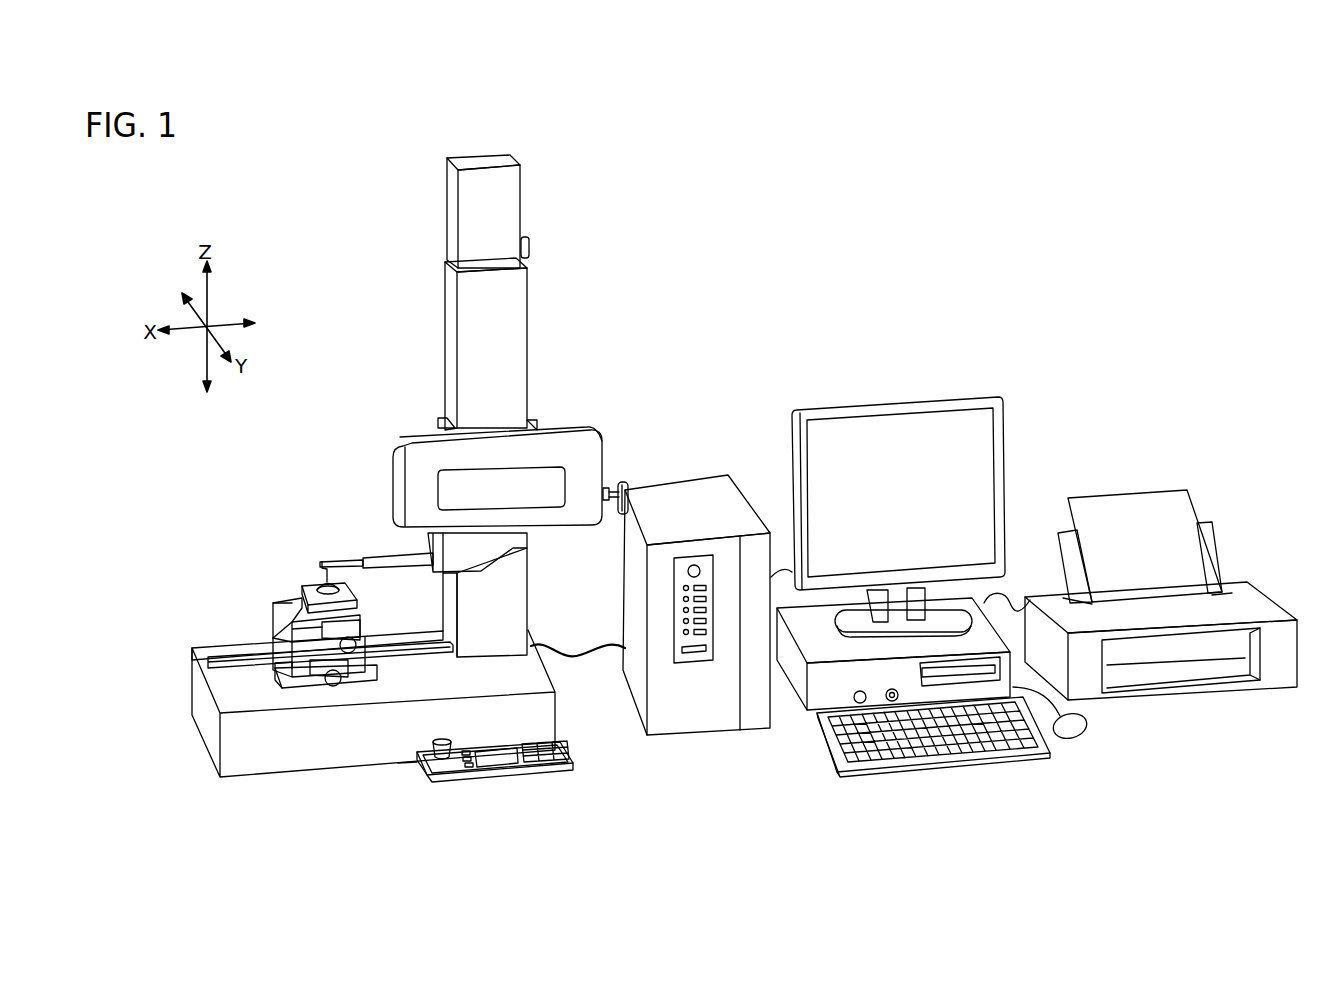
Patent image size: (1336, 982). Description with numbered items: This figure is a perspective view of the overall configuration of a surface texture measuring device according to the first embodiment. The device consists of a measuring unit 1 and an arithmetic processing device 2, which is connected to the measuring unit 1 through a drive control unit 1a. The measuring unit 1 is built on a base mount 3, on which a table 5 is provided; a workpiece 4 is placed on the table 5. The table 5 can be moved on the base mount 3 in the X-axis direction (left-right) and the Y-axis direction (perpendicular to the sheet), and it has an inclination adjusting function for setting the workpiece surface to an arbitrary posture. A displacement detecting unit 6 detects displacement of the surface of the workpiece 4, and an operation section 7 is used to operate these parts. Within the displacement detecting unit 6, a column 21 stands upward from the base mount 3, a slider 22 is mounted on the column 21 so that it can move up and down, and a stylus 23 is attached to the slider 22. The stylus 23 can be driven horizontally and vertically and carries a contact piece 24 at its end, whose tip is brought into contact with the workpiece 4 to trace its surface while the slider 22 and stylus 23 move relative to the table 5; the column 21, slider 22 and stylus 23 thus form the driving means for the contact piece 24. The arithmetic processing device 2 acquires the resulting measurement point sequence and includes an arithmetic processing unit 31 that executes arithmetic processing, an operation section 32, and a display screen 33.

The measuring unit 1 is at (400, 183).
The drive control unit 1a is at (693, 444).
The arithmetic processing device 2 is at (860, 334).
The base mount 3 is at (298, 757).
The workpiece 4 is at (320, 580).
The table 5 is at (270, 582).
The displacement detecting unit 6 is at (411, 406).
The operation section 7 is at (518, 770).
The column 21 is at (520, 212).
The slider 22 is at (576, 432).
The stylus 23 is at (402, 566).
The contact piece 24 is at (333, 560).
The arithmetic processing unit 31 is at (802, 692).
The operation section 32 is at (1083, 737).
The display screen 33 is at (928, 408).